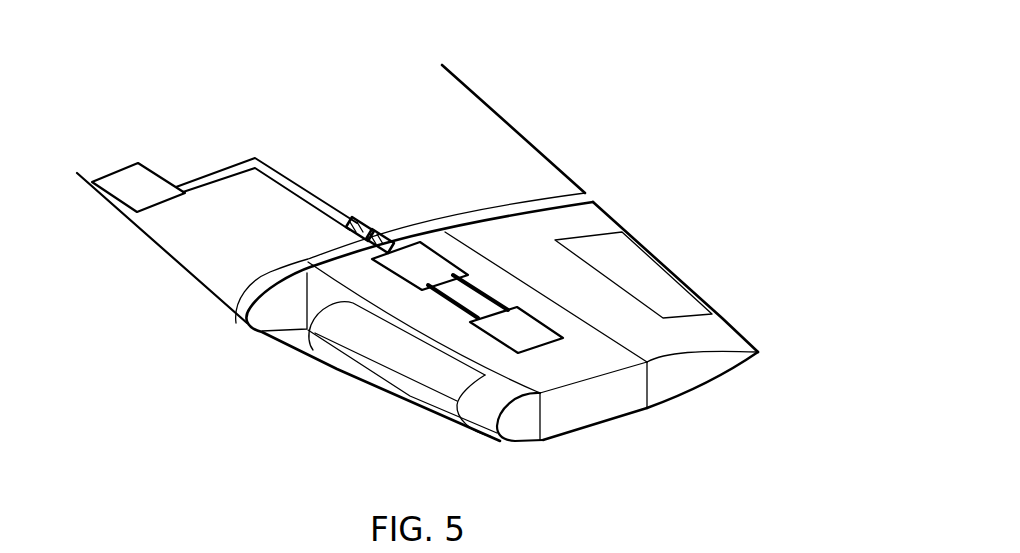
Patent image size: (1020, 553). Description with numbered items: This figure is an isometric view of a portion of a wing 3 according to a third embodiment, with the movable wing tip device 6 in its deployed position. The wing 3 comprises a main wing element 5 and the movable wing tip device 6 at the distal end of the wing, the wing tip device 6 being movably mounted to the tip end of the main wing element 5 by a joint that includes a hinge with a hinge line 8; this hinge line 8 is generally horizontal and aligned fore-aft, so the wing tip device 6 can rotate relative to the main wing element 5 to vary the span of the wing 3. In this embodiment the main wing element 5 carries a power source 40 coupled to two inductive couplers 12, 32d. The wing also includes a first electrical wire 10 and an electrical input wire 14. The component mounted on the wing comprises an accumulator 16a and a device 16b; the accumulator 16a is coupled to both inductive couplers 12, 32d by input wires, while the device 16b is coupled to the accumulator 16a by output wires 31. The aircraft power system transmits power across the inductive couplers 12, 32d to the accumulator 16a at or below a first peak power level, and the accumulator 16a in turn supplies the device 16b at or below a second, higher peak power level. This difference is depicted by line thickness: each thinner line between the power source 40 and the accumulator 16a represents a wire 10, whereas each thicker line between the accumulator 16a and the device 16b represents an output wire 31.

The starboard wing 3 is at (625, 92).
The main wing element 5 is at (492, 107).
The movable wing tip device 6 is at (667, 267).
The hinge line 8 is at (597, 193).
The first electrical wire 10 is at (288, 192).
The inductive coupler 12 is at (365, 246).
The electrical input wire 14 is at (398, 244).
The accumulator 16a is at (392, 271).
The device 16b is at (492, 337).
The output wires 31 is at (460, 306).
The inductive coupler 32d is at (369, 217).
The power source 40 is at (120, 172).